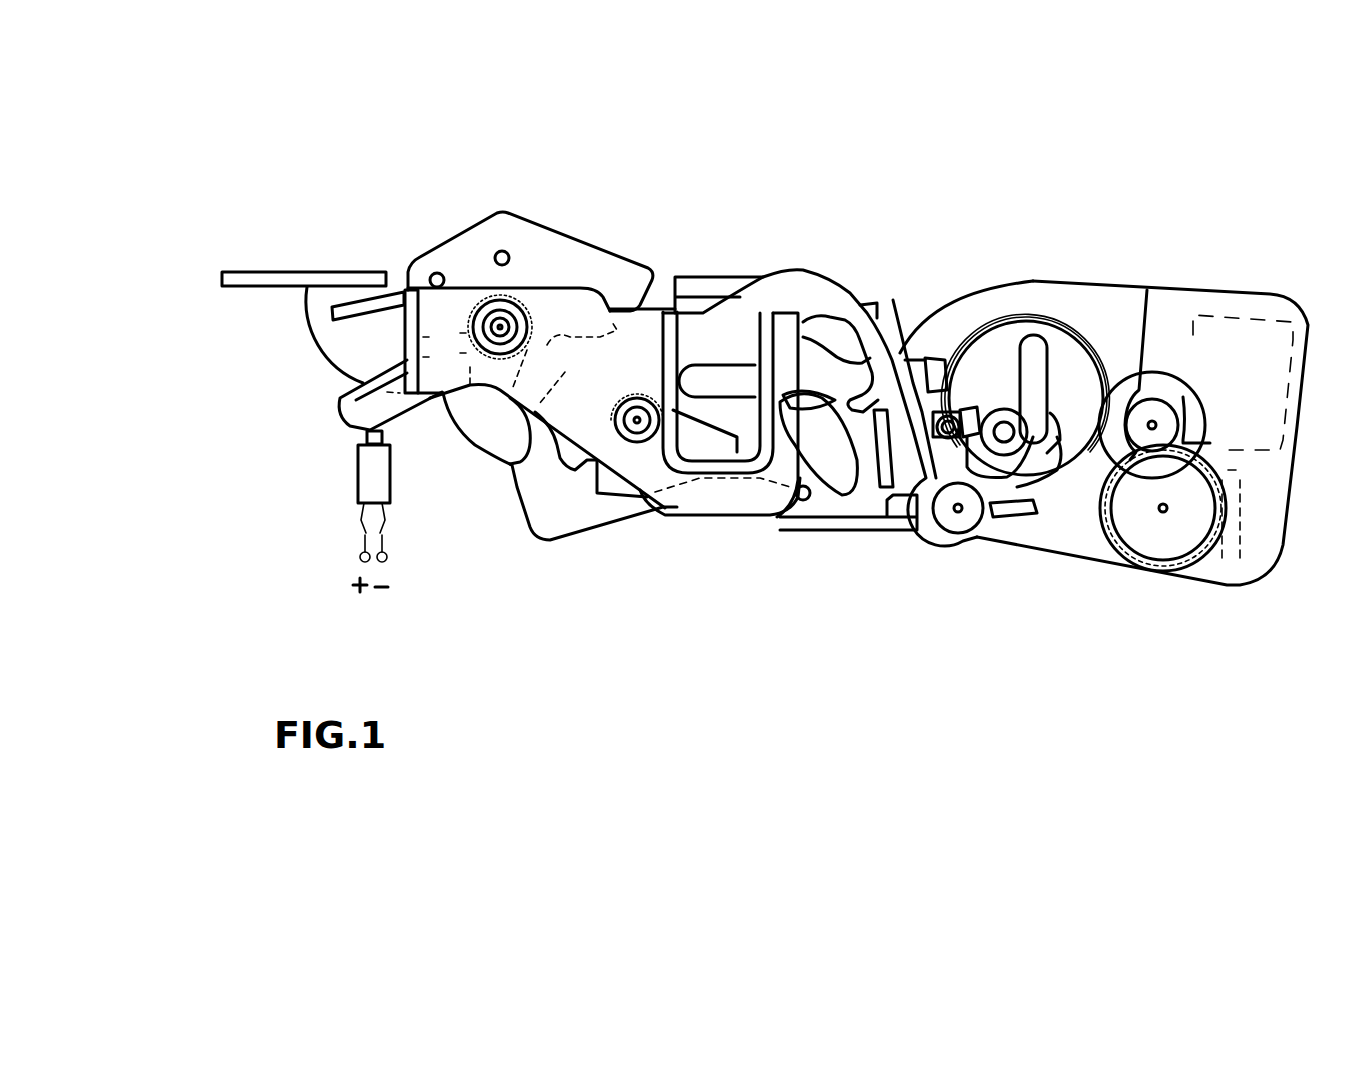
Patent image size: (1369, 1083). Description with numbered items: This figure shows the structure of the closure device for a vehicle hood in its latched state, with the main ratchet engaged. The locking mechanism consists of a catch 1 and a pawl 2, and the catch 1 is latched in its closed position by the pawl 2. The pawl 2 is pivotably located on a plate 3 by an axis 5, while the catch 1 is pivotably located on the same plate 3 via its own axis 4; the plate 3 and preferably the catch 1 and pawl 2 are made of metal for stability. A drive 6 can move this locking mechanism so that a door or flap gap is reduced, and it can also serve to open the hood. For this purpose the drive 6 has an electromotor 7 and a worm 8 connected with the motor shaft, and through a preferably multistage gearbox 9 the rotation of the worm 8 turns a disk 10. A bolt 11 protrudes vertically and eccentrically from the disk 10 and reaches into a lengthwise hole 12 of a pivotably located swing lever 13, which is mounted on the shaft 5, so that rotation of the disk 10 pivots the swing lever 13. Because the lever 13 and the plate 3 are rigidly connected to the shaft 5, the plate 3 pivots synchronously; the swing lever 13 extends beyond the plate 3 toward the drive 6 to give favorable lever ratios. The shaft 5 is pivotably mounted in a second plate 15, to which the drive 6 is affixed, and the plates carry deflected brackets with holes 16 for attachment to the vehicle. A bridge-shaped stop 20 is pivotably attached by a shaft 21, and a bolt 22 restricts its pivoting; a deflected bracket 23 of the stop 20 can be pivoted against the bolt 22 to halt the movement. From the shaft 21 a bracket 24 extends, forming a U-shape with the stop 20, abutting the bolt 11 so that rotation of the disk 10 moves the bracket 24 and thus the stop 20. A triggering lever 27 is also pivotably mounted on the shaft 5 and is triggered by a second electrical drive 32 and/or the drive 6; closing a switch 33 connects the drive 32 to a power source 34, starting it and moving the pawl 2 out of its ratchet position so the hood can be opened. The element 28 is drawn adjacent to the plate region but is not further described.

The catch 1 is at (797, 293).
The pawl 2 is at (500, 407).
The plate 3 is at (723, 502).
The axis 4 is at (637, 427).
The axis or shaft 5 is at (500, 327).
The drive 6 is at (1290, 572).
The electromotor 7 is at (1235, 357).
The worm 8 is at (1227, 537).
The gearbox 9 is at (1150, 397).
The disk 10 is at (1067, 357).
The bolt 11 is at (1034, 336).
The lengthwise hole 12 is at (1000, 405).
The swing lever 13 is at (617, 282).
The second plate 15 is at (328, 333).
The holes 16 is at (255, 278).
The bridge-shaped stop 20 is at (905, 480).
The axis or shaft 21 is at (958, 508).
The bolt 22 is at (905, 360).
The deflected bracket 23 is at (943, 353).
The bracket 24 is at (1031, 537).
The triggering lever 27 is at (372, 410).
The strip 28 is at (353, 305).
The second electrical drive 32 is at (362, 487).
The switch 33 is at (381, 532).
The power source 34 is at (397, 590).